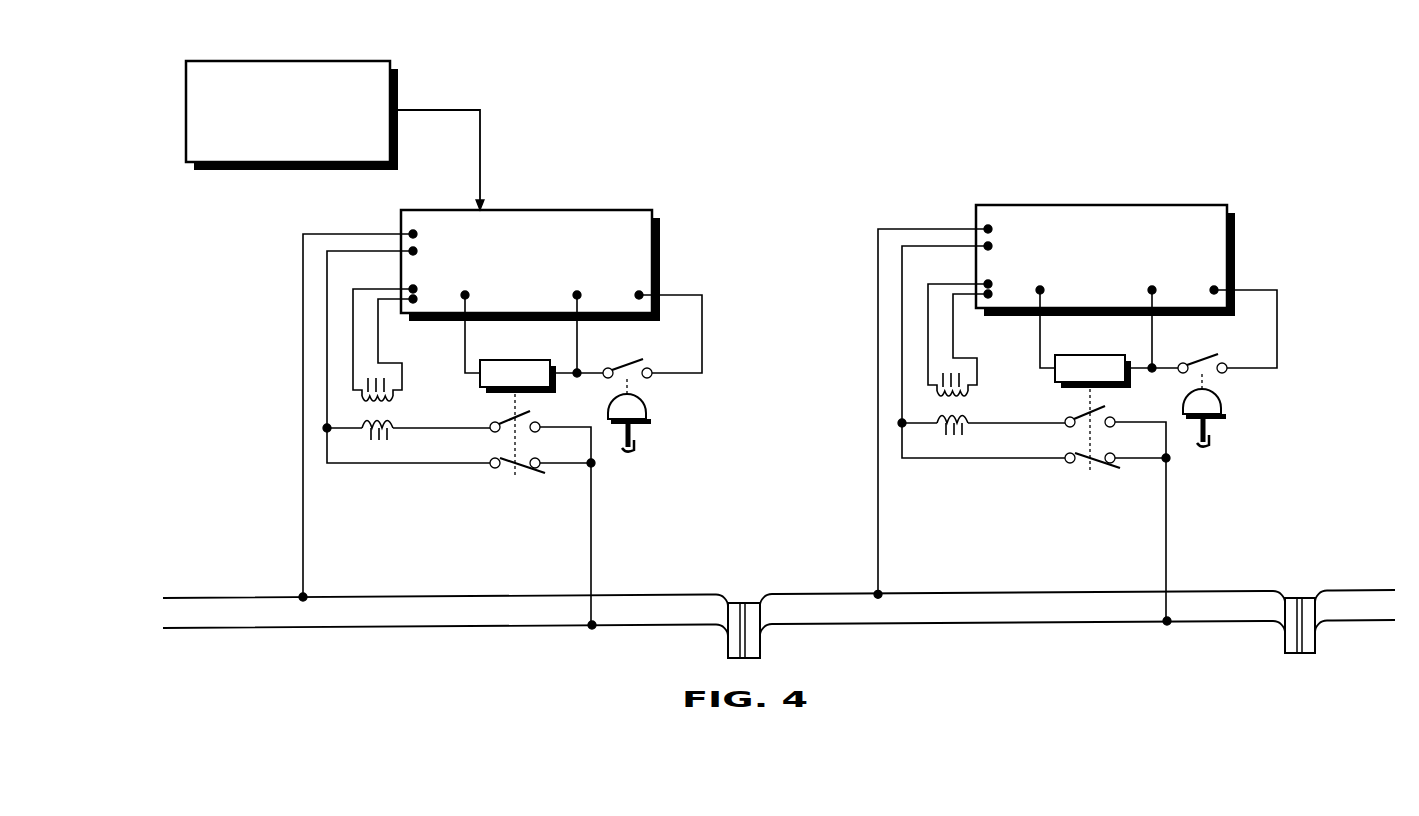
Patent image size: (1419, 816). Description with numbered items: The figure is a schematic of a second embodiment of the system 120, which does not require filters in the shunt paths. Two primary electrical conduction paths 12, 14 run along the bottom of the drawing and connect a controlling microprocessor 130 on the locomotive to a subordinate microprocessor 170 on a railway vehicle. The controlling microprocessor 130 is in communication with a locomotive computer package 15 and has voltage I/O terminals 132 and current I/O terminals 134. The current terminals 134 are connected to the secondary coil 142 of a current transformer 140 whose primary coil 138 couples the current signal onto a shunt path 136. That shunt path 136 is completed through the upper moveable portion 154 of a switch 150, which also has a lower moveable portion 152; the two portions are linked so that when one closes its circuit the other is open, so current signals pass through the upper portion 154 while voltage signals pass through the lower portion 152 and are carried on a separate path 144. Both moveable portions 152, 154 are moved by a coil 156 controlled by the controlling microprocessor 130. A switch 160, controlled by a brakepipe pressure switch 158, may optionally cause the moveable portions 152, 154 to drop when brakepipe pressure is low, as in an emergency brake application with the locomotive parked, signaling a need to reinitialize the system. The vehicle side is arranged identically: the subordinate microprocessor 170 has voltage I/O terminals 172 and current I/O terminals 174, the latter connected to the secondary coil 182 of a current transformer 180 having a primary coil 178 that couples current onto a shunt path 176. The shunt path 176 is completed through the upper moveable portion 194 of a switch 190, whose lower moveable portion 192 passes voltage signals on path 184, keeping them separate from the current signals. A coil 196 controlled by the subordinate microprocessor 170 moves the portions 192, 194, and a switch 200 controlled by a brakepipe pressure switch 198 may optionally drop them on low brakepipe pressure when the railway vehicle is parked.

The primary electrical conduction path 12 is at (233, 596).
The primary electrical conduction path 14 is at (247, 630).
The locomotive computer package 15 is at (397, 74).
The track circuit system 120 is at (762, 118).
The controlling microprocessor 130 is at (572, 210).
The voltage I/O terminals 132 is at (407, 245).
The current I/O terminals 134 is at (400, 292).
The shunt path 136 is at (433, 428).
The primary coil 138 is at (369, 430).
The current transformer 140 is at (405, 405).
The secondary coil 142 is at (360, 403).
The path 144 is at (402, 466).
The switch 150 is at (526, 474).
The lower moveable portion 152 is at (518, 454).
The upper moveable portion 154 is at (515, 418).
The coil 156 is at (495, 361).
The brakepipe pressure switch 158 is at (648, 406).
The switch 160 is at (635, 357).
The subordinate microprocessor 170 is at (1112, 205).
The voltage I/O terminals 172 is at (980, 239).
The current I/O terminals 174 is at (975, 287).
The shunt path 176 is at (1008, 423).
The primary coil 178 is at (944, 427).
The current transformer 180 is at (980, 400).
The secondary coil 182 is at (935, 389).
The path 184 is at (977, 461).
The switch 190 is at (1084, 469).
The lower moveable portion 192 is at (1095, 449).
The upper moveable portion 194 is at (1092, 413).
The coil 196 is at (1073, 356).
The brakepipe pressure switch 198 is at (1225, 401).
The switch 200 is at (1210, 352).